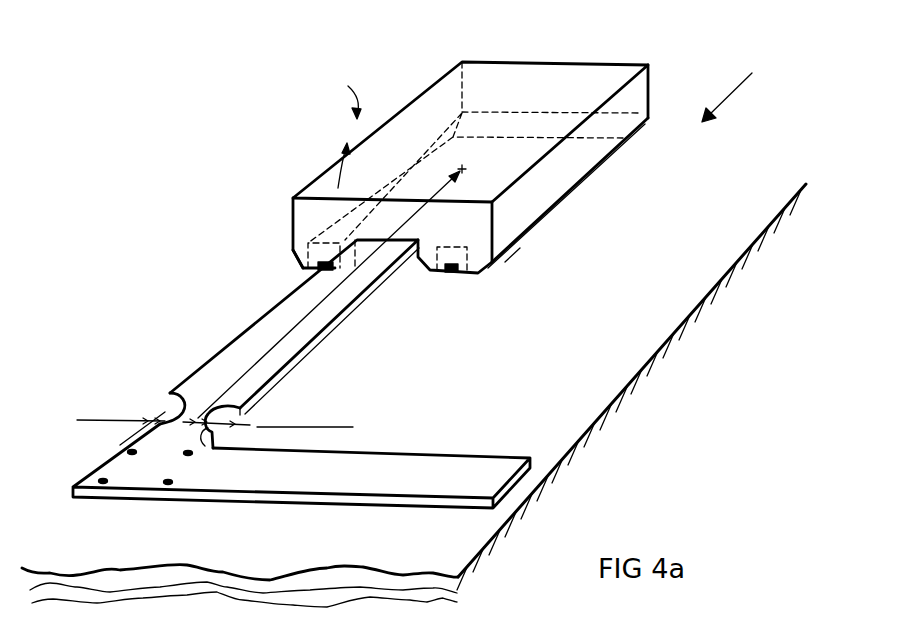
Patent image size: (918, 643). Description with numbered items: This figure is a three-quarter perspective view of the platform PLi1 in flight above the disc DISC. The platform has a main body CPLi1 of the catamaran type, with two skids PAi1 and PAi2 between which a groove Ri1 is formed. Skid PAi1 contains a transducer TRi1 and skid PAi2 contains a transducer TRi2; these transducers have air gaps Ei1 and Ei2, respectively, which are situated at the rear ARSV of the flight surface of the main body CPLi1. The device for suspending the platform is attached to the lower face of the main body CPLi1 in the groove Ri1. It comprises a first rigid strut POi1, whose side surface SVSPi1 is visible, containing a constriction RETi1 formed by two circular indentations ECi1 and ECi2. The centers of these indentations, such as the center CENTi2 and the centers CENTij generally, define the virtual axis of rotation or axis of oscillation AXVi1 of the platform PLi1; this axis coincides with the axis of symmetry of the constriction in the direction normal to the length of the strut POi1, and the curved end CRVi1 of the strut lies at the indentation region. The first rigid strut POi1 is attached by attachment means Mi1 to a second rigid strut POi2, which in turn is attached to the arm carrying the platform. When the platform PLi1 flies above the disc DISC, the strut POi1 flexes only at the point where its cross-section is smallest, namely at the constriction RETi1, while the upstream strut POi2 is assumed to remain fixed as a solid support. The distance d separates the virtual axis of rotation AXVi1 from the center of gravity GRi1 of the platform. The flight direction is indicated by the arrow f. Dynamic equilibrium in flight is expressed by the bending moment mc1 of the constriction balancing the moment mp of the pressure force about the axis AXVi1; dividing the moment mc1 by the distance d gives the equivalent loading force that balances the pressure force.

The platform PLi1 is at (601, 66).
The main body CPLi1 is at (585, 157).
The skid PAi2 is at (573, 190).
The rear of the flight surface ARSV is at (516, 248).
The transducer TRi2 is at (460, 272).
The air gap Ei2 is at (443, 273).
The groove Ri1 is at (417, 248).
The skid PAi1 is at (332, 243).
The transducer TRi1 is at (318, 267).
The air gap Ei1 is at (310, 271).
The first rigid strut POi1 is at (330, 338).
The arm side surface SVSPi1 is at (287, 370).
The virtual axis of rotation AXVi1 is at (320, 424).
The distance d is at (423, 221).
The center of gravity GRi1 is at (482, 172).
The curved end CRVi1 is at (172, 394).
The circular indentation ECi1 is at (142, 421).
The centre line CENTij is at (143, 421).
The constriction RETi1 is at (201, 428).
The center of indentation CENTi2 is at (235, 422).
The circular indentation ECi2 is at (208, 430).
The second rigid strut POi2 is at (440, 454).
The attachment means Mi1 is at (96, 483).
The disc DISC is at (643, 370).
The force direction f is at (727, 93).
The bending moment mc1 is at (340, 89).
The moment of the pressure force mp is at (302, 165).